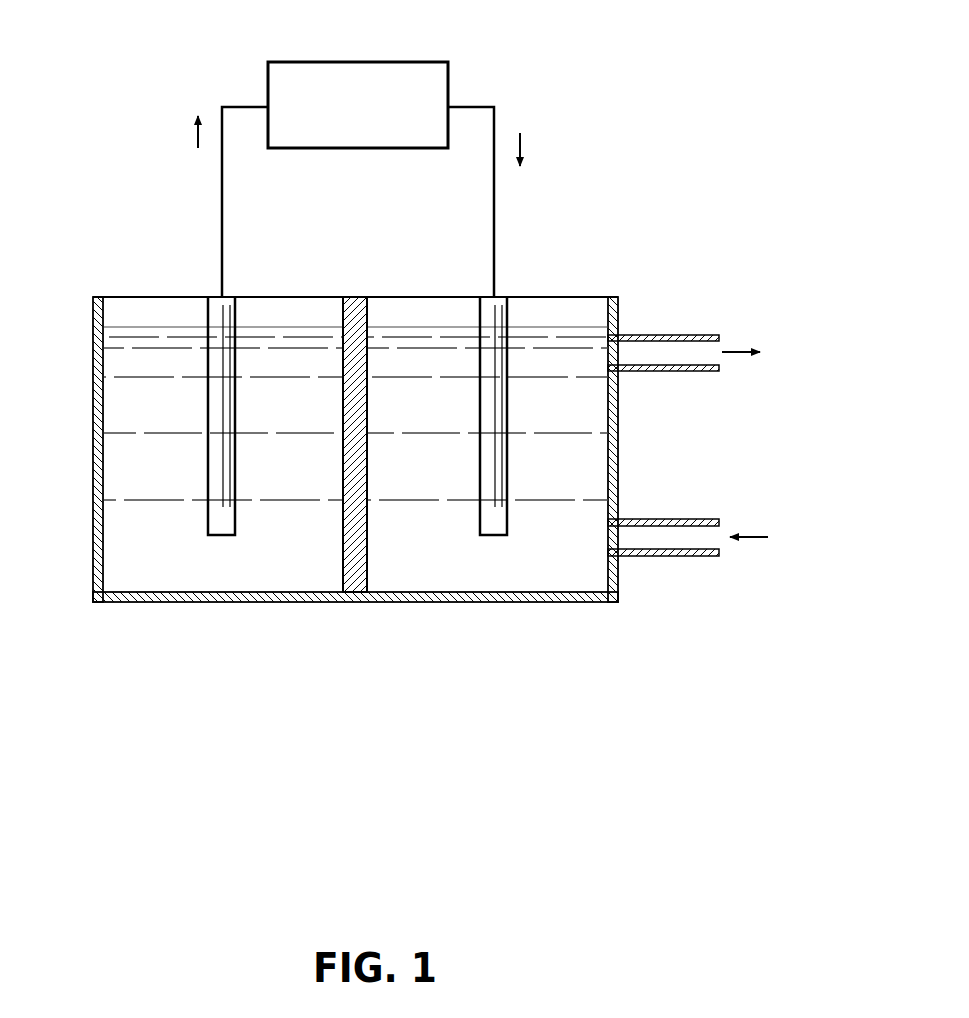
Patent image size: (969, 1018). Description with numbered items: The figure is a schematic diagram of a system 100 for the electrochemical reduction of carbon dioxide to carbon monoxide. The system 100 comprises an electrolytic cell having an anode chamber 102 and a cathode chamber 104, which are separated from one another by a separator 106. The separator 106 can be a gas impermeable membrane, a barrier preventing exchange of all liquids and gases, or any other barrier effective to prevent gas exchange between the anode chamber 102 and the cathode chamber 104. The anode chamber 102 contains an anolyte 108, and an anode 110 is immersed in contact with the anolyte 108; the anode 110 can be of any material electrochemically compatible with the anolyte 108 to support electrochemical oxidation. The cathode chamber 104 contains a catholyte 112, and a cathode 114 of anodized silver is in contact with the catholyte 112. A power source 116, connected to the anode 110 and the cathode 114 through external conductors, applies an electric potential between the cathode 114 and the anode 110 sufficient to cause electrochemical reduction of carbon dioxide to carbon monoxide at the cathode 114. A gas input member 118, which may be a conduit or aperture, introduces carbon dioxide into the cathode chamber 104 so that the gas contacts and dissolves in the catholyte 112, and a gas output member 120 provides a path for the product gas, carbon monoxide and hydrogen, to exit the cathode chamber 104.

The system 100 is at (115, 166).
The anode chamber 102 is at (216, 613).
The cathode chamber 104 is at (516, 614).
The separator 106 is at (357, 570).
The anolyte 108 is at (145, 464).
The anode 110 is at (212, 316).
The catholyte 112 is at (590, 399).
The cathode 114 is at (497, 316).
The power source 116 is at (408, 75).
The gas input member 118 is at (660, 519).
The gas output member 120 is at (660, 335).